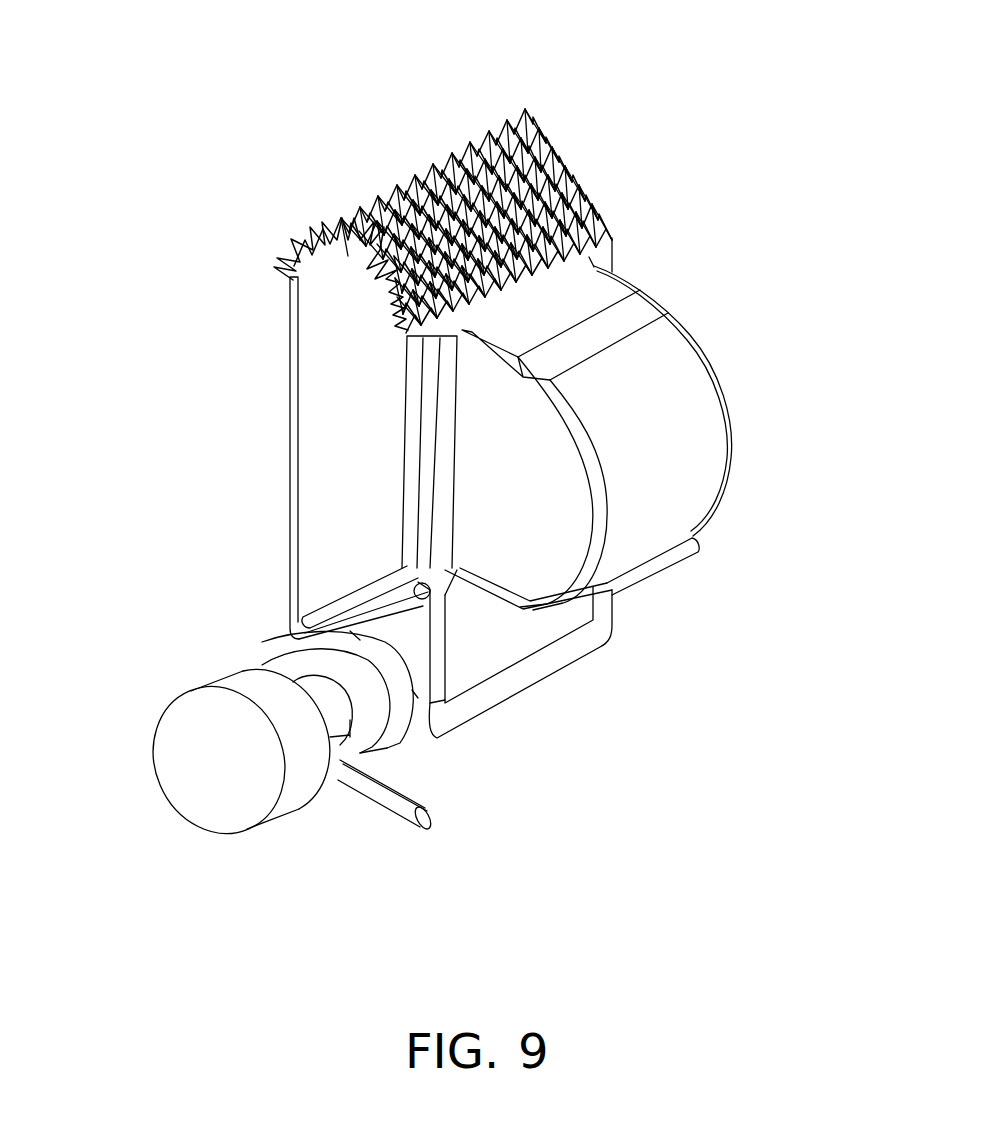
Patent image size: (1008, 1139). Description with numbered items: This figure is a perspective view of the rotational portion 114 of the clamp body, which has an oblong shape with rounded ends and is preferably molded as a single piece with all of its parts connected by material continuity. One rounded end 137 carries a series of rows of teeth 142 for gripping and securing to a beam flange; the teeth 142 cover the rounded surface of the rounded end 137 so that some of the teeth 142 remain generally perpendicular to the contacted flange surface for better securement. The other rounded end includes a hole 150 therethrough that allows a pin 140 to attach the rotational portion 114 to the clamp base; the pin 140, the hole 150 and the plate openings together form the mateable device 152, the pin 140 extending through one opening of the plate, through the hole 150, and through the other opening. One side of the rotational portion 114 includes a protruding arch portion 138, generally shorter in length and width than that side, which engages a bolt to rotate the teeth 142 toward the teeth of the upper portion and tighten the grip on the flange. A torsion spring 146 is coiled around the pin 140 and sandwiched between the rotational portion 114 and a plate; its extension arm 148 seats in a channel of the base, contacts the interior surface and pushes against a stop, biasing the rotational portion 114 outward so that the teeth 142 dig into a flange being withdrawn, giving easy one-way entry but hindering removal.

The rotational portion 114 is at (648, 235).
The rounded end 137 is at (320, 289).
The arch portion 138 is at (700, 423).
The pin 140 is at (212, 772).
The teeth 142 is at (533, 128).
The torsion spring 146 is at (297, 653).
The extension arm 148 is at (430, 807).
The hole 150 is at (408, 722).
The mateable device 152 is at (195, 671).